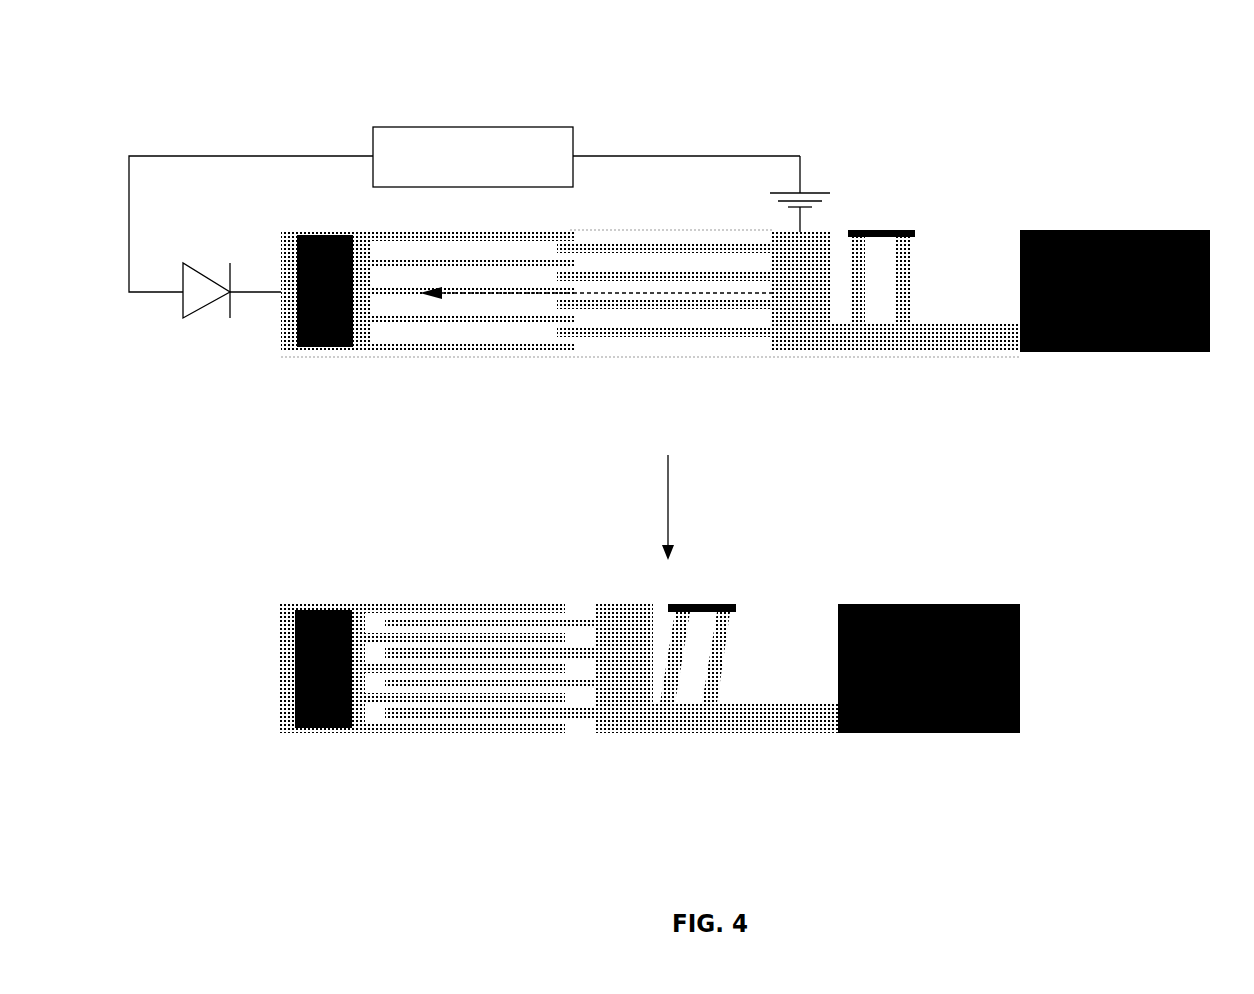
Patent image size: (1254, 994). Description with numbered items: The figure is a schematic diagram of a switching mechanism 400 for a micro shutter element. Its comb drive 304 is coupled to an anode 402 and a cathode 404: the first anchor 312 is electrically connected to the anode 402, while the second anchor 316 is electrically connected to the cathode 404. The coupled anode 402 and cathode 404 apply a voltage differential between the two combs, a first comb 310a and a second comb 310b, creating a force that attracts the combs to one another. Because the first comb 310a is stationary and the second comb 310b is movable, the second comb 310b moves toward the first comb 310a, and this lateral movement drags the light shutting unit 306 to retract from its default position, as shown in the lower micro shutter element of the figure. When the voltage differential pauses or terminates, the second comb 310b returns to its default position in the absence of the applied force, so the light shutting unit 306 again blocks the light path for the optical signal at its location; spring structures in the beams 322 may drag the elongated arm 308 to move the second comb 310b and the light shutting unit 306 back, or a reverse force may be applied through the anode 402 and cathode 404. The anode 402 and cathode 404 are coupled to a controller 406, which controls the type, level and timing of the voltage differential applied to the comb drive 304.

The switching mechanism 400 is at (700, 36).
The anode 402 is at (185, 318).
The cathode 404 is at (829, 193).
The controller 406 is at (473, 157).
The comb drive 304 is at (577, 357).
The light shutting unit 306 is at (1108, 352).
The elongated arm 308 is at (983, 350).
The first comb 310a is at (465, 323).
The second comb 310b is at (665, 307).
The first anchor 312 is at (328, 347).
The second anchor 316 is at (808, 343).
The beams 322 is at (858, 312).